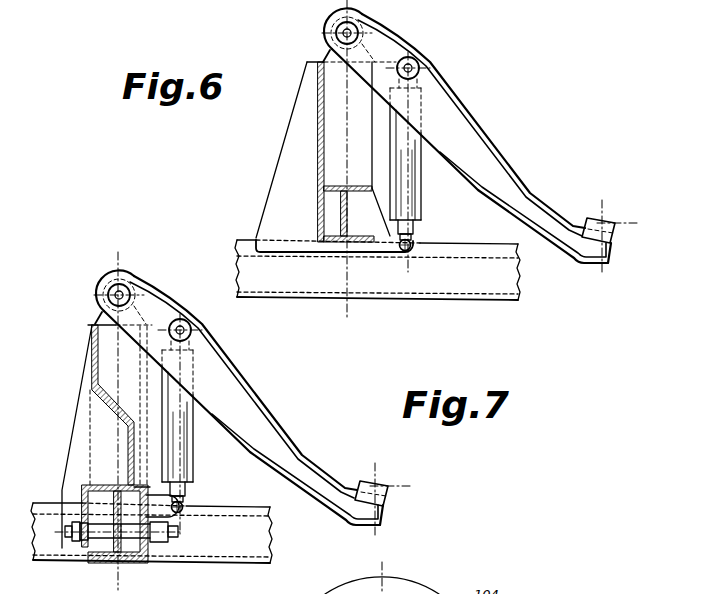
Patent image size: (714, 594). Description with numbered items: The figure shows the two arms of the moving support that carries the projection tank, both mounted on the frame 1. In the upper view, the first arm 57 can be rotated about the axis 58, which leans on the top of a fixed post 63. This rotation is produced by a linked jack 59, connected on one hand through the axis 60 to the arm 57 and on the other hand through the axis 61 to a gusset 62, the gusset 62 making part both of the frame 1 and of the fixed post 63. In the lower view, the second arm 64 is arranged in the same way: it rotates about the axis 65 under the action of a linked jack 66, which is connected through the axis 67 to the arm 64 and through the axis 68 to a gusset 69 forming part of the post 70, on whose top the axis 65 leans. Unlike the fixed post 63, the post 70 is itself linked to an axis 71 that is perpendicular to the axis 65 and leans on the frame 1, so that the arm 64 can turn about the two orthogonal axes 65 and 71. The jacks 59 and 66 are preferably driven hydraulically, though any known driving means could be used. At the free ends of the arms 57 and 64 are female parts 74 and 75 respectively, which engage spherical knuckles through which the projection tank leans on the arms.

In FIG. 6, the frame 1 is at (503, 300).
In FIG. 7, the frame 1 is at (252, 563).
In FIG. 6, the first arm 57 is at (476, 148).
In FIG. 6, the axis 58 is at (362, 26).
In FIG. 6, the jack 59 is at (422, 201).
In FIG. 6, the axis 60 is at (422, 64).
In FIG. 6, the axis 61 is at (408, 252).
In FIG. 6, the gusset 62 is at (378, 252).
In FIG. 6, the fixed post 63 is at (318, 133).
In FIG. 7, the second arm 64 is at (252, 397).
In FIG. 7, the axis 65 is at (128, 278).
In FIG. 7, the jack 66 is at (194, 468).
In FIG. 7, the axis 67 is at (193, 328).
In FIG. 7, the axis 68 is at (188, 511).
In FIG. 7, the gusset 69 is at (180, 535).
In FIG. 7, the post 70 is at (117, 411).
In FIG. 7, the axis 71 is at (101, 556).
In FIG. 6, the female part 74 is at (587, 218).
In FIG. 7, the female part 75 is at (393, 495).